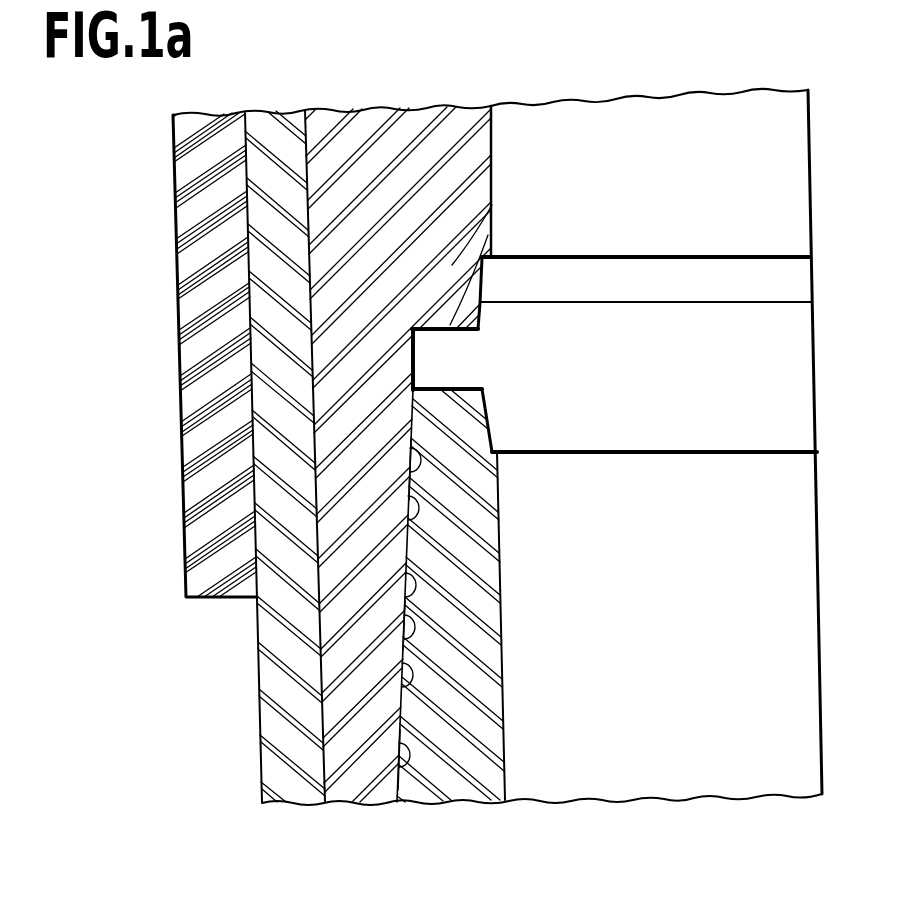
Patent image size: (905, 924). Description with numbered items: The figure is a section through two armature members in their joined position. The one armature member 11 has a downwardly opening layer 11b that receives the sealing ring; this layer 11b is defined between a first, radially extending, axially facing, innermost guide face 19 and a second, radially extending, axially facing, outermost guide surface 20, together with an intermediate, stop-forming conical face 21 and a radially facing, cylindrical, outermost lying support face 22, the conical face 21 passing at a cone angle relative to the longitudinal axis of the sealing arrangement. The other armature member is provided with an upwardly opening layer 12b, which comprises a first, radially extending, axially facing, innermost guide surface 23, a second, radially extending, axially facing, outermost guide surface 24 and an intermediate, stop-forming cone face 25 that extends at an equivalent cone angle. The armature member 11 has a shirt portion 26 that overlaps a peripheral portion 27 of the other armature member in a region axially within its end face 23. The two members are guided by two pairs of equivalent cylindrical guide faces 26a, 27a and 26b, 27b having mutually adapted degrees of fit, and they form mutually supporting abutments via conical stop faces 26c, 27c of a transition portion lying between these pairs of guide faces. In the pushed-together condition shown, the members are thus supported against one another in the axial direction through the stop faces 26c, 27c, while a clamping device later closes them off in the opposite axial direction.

The armature member 11 is at (460, 167).
The second outermost guide surface 20 is at (493, 216).
The first innermost guide face 19 is at (490, 266).
The stop-forming conical face 21 is at (600, 298).
The downwardly opening layer 11b is at (500, 326).
The upwardly opening layer 12b is at (505, 382).
The stop-forming cone face 25 is at (483, 422).
The first innermost guide surface 23 is at (493, 451).
The cylindrical outermost support face 22 is at (413, 360).
The second outermost guide surface 24 is at (413, 388).
The cylindrical guide face 26a is at (257, 552).
The conical stop face 26c is at (407, 603).
The shirt portion 26 is at (345, 651).
The cylindrical guide face 26b is at (400, 697).
The cylindrical guide face 27a is at (417, 530).
The peripheral portion 27 is at (480, 639).
The conical stop face 27c is at (415, 641).
The cylindrical guide face 27b is at (400, 770).